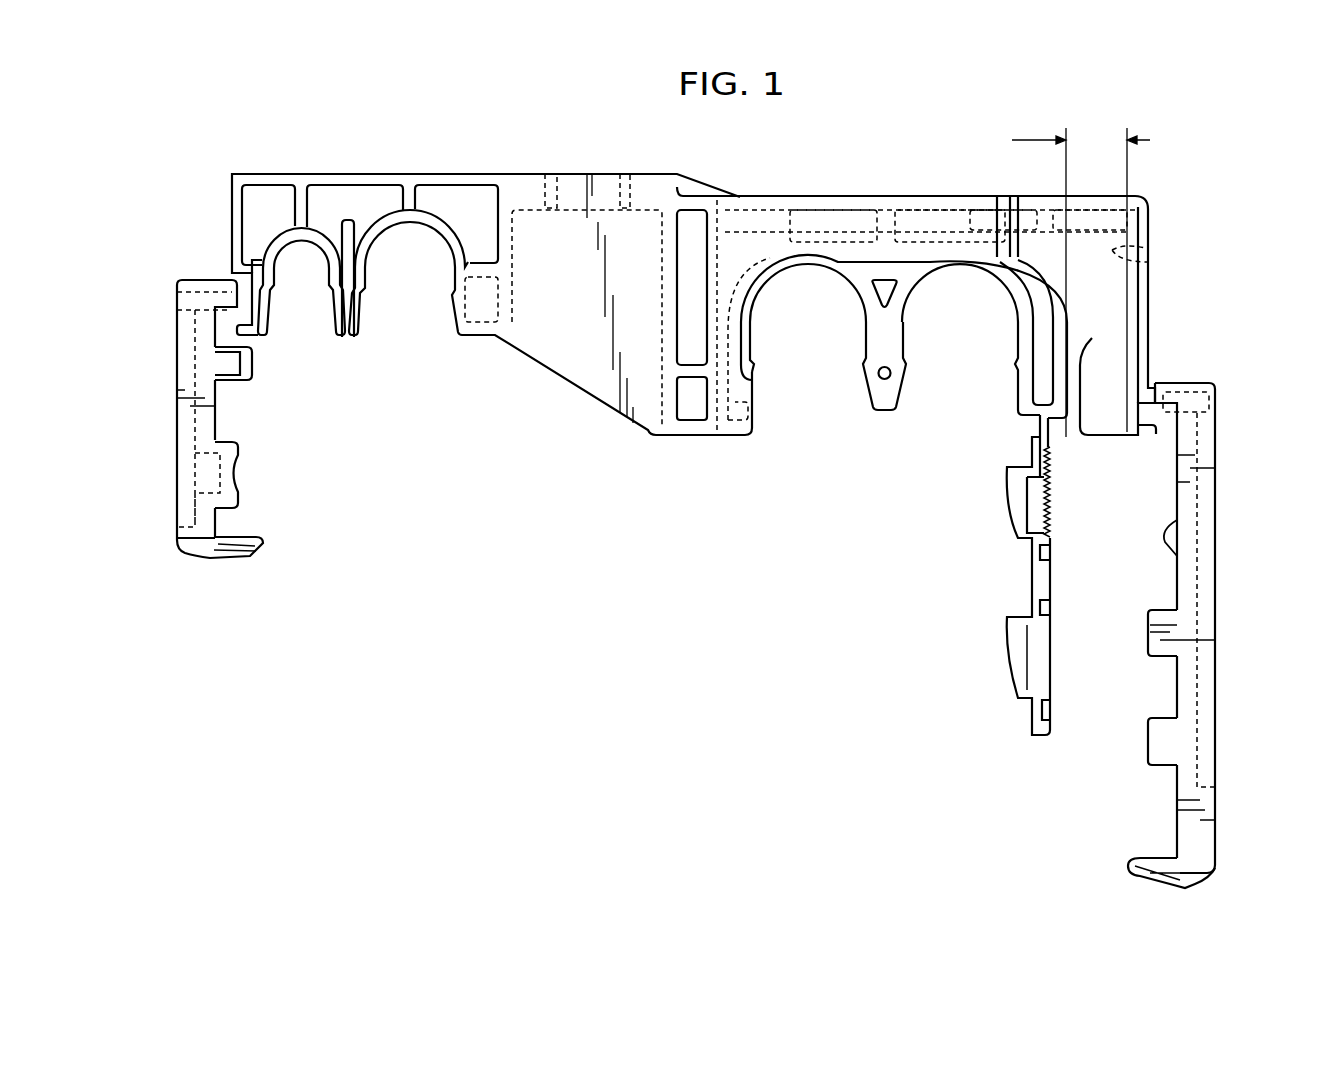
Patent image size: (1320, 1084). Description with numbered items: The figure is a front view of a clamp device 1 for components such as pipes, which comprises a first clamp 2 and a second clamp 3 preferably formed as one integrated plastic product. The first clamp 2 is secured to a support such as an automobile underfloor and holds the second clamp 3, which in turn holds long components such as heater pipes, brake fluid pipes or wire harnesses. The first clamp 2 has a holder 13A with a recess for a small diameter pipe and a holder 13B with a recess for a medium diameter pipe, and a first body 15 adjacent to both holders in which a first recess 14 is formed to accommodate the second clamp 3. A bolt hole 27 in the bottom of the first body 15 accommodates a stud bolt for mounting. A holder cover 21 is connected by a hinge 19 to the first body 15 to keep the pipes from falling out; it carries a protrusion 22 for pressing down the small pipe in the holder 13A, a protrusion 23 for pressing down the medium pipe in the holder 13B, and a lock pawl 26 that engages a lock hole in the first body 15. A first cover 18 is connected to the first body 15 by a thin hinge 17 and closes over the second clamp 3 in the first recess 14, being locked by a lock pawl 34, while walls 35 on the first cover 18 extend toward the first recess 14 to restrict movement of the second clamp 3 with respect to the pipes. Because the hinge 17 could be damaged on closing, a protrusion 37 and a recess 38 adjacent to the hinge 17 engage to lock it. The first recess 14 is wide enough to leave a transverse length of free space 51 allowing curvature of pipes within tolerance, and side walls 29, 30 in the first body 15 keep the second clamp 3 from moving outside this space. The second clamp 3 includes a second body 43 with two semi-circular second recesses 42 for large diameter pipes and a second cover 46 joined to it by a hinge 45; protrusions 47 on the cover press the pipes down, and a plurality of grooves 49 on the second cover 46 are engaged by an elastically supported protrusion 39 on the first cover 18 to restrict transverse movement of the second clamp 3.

The clamp device 1 is at (705, 537).
The first clamp 2 is at (588, 400).
The second clamp 3 is at (857, 408).
The holder 13A is at (297, 262).
The holder 13B is at (413, 242).
The first recess 14 is at (1085, 325).
The first body 15 is at (515, 195).
The hinge 17 is at (1157, 383).
The first cover 18 is at (1205, 840).
The hinge 19 is at (237, 303).
The holder cover 21 is at (188, 427).
The protrusion 22 is at (244, 370).
The protrusion 23 is at (230, 480).
The lock pawl 26 is at (248, 562).
The bolt hole 27 is at (563, 193).
The side wall 29 is at (723, 225).
The side wall 30 is at (1115, 260).
The lock pawl 34 is at (1150, 887).
The walls 35 is at (1152, 630).
The protrusion 37 is at (1145, 434).
The recess 38 is at (1208, 403).
The protrusion 39 is at (1163, 527).
The second recesses 42 is at (808, 332).
The second body 43 is at (905, 205).
The hinge 45 is at (1050, 432).
The second cover 46 is at (1040, 578).
The protrusions 47 is at (1005, 490).
The grooves 49 is at (1053, 492).
The free space 51 is at (1081, 281).